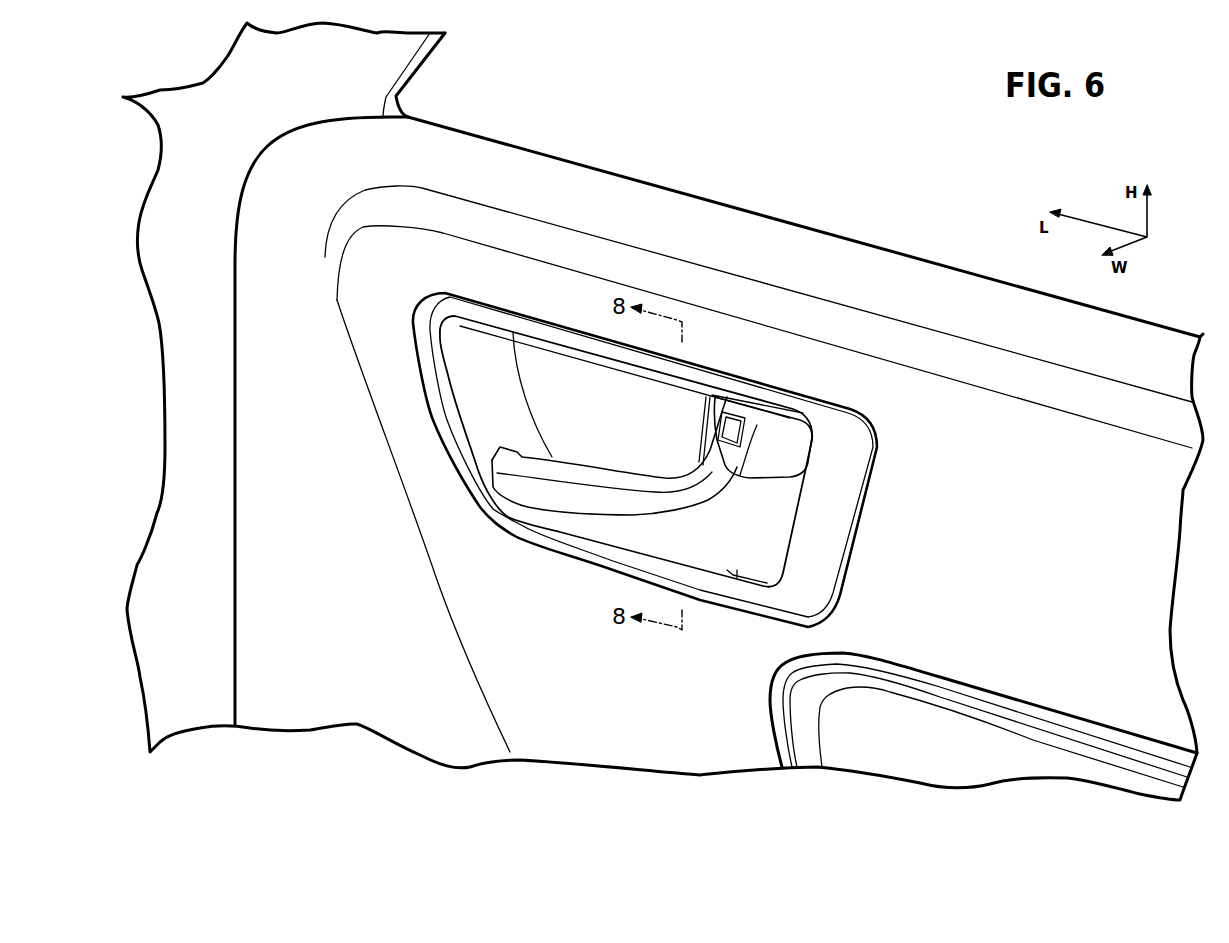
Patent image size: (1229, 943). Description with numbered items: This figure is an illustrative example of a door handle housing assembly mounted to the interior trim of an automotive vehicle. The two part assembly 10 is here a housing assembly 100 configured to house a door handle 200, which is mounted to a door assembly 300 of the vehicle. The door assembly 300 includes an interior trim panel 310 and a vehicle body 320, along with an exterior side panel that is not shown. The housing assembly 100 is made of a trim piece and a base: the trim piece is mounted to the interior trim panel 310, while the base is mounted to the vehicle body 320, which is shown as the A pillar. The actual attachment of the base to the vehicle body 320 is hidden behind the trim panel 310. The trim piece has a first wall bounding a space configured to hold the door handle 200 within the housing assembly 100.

The two part assembly 10 is at (862, 170).
The housing assembly 100 is at (569, 589).
The door handle 200 is at (652, 468).
The door assembly 300 is at (1208, 316).
The interior trim panel 310 is at (983, 660).
The vehicle body 320 is at (392, 62).